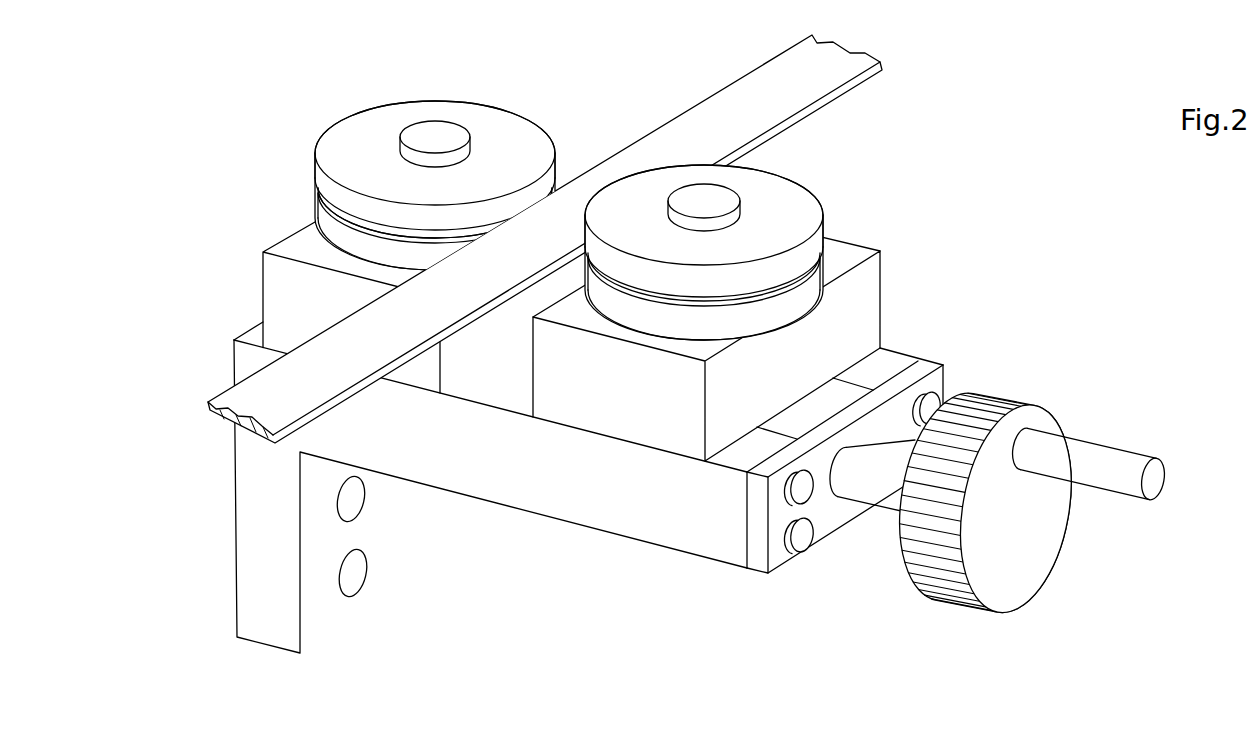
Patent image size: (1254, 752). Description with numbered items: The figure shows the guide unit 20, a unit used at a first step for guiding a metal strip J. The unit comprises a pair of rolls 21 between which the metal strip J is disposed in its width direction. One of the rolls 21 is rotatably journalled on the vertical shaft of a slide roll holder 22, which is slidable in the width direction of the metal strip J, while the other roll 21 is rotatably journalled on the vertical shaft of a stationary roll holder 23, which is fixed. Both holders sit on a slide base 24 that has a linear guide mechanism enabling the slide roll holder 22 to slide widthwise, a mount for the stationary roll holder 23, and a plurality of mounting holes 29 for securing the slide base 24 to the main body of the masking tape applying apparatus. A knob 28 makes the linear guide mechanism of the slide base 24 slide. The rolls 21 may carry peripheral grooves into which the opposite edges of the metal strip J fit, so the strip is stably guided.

The guide unit 20 is at (972, 106).
The rolls 21 is at (605, 193).
The slide roll holder 22 is at (870, 315).
The stationary roll holder 23 is at (277, 281).
The slide base 24 is at (688, 538).
The knob 28 is at (948, 600).
The mounting holes 29 is at (362, 593).
The metal strip J is at (256, 432).